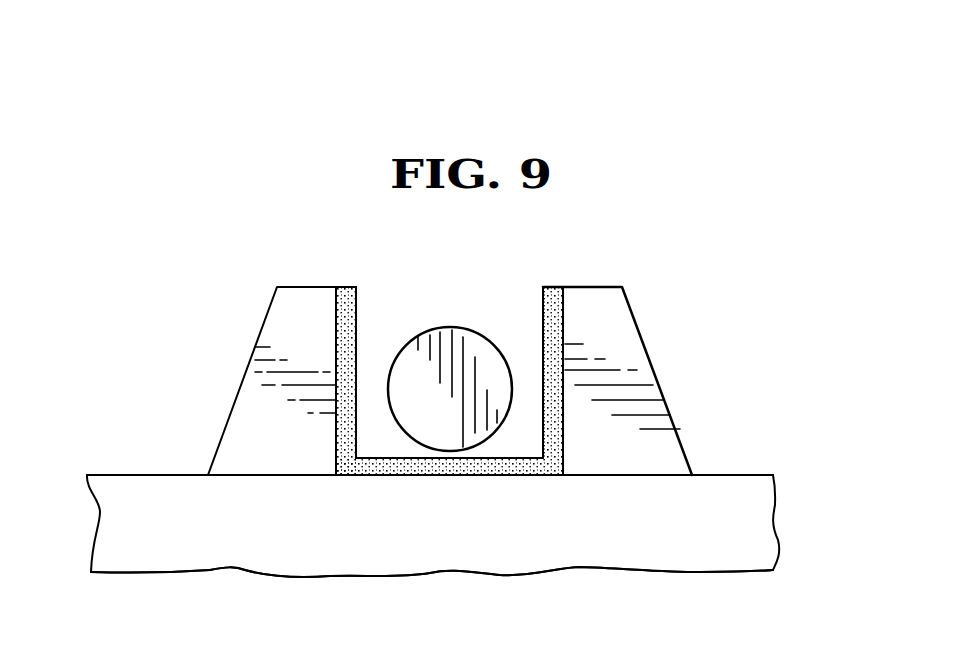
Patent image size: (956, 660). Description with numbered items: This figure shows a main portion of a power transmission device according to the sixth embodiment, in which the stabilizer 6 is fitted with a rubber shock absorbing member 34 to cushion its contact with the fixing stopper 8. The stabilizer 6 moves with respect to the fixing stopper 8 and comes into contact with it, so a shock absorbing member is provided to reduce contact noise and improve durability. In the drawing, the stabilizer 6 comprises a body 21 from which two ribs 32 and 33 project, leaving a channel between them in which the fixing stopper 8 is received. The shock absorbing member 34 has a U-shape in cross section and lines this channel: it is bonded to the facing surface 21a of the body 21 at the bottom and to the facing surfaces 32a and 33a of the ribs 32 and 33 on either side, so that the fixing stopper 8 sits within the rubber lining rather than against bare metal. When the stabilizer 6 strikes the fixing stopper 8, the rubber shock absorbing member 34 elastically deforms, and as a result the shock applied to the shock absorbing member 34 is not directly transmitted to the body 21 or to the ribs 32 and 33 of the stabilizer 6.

The stabilizer 6 is at (752, 528).
The body 21 is at (613, 544).
The facing surface 21a is at (378, 474).
The rib 32 is at (265, 385).
The facing surface 32a is at (335, 416).
The rib 33 is at (627, 348).
The facing surface 33a is at (562, 422).
The shock absorbing member 34 is at (423, 465).
The fixing stopper 8 is at (458, 340).